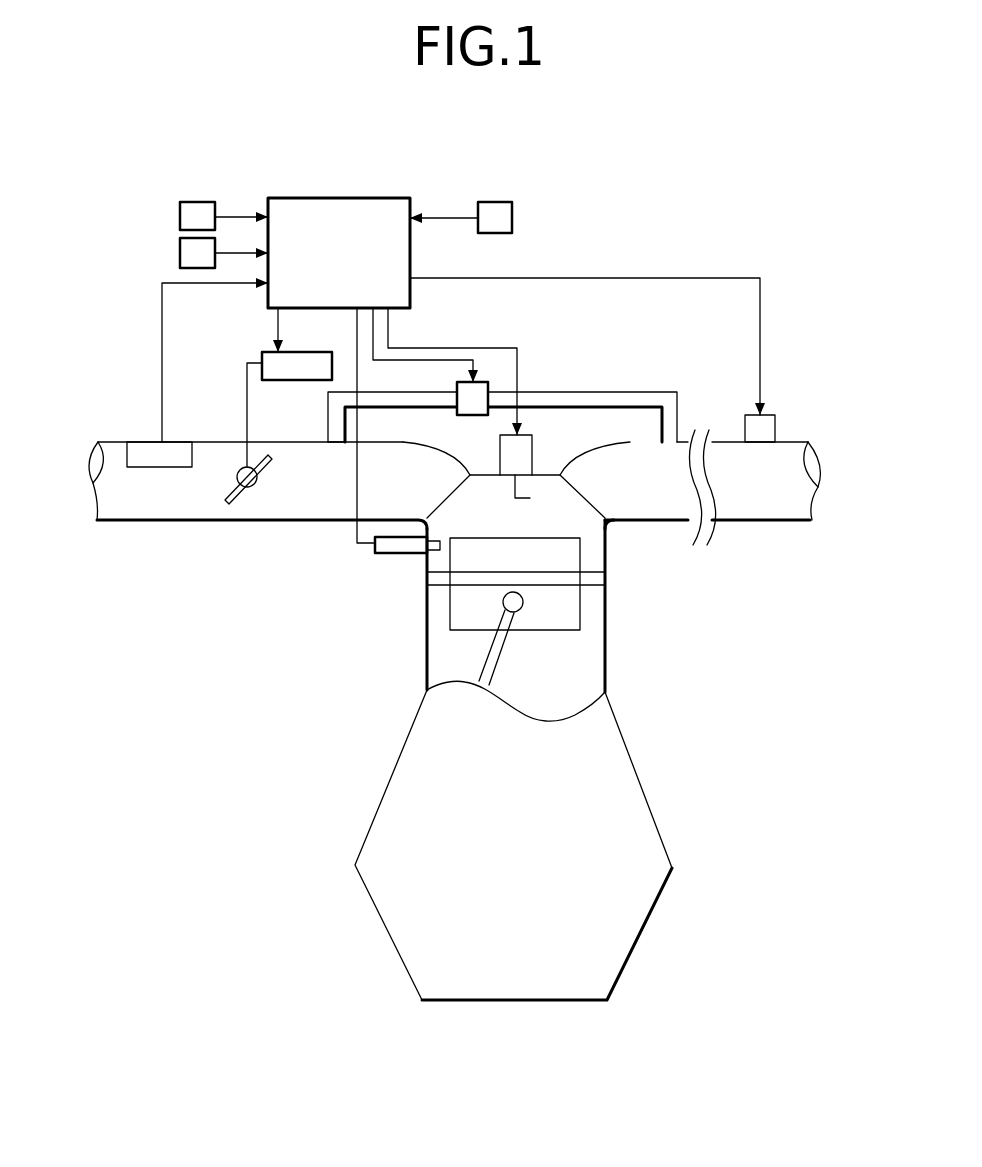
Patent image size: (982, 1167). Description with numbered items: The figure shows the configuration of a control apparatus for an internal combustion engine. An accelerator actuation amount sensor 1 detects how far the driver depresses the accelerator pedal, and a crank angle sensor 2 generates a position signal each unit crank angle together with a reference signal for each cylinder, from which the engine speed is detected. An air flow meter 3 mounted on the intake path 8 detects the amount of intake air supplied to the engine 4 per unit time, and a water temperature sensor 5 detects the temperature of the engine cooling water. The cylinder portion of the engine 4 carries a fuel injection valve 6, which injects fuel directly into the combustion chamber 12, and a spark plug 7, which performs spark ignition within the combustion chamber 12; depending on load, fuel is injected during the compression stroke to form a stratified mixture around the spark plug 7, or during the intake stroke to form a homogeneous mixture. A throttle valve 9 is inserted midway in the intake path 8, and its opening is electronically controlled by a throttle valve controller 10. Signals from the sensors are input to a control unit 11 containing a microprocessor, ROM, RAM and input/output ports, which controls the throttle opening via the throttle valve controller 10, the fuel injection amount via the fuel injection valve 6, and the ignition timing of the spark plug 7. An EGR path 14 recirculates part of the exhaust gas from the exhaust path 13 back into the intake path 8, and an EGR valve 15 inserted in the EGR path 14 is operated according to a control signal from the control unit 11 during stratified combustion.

The accelerator actuation amount sensor 1 is at (196, 200).
The crank angle sensor 2 is at (180, 253).
The air flow meter 3 is at (178, 440).
The engine 4 is at (624, 653).
The water temperature sensor 5 is at (497, 202).
The fuel injection valve 6 is at (383, 557).
The spark plug 7 is at (533, 445).
The intake path 8 is at (223, 440).
The throttle valve 9 is at (258, 478).
The throttle valve controller 10 is at (292, 380).
The control unit 11 is at (330, 198).
The combustion chamber 12 is at (588, 558).
The exhaust path 13 is at (763, 523).
The EGR path 14 is at (624, 392).
The EGR valve 15 is at (456, 417).